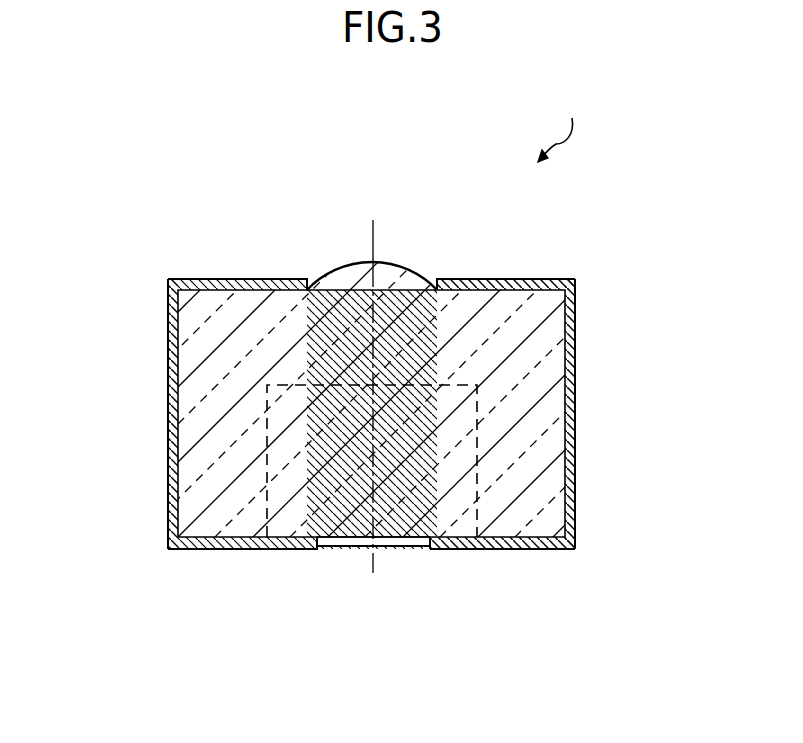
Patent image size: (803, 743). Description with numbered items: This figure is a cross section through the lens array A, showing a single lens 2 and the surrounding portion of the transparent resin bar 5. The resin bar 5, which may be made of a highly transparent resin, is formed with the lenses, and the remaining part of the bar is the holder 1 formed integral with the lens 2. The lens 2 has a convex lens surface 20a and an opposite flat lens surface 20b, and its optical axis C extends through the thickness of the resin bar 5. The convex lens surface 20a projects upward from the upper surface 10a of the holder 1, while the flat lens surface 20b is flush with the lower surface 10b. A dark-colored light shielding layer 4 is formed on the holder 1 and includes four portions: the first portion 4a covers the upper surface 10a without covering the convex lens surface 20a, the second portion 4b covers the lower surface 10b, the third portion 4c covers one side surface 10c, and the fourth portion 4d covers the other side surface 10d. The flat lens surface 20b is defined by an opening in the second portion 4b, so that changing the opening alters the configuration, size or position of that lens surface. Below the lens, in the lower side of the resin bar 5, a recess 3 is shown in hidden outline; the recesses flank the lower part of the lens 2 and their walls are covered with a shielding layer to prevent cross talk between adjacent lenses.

The holder 1 is at (537, 417).
The lens 2 is at (337, 317).
The recess 3 is at (333, 487).
The light shielding layer 4 is at (371, 414).
The first portion 4a is at (470, 278).
The second portion 4b is at (537, 550).
The third portion 4c is at (167, 448).
The fourth portion 4d is at (573, 483).
The resin bar 5 is at (532, 353).
The upper surface 10a is at (510, 278).
The lower surface 10b is at (507, 550).
The side surface 10c is at (167, 407).
The side surface 10d is at (572, 442).
The convex lens surface 20a is at (398, 296).
The flat lens surface 20b is at (393, 550).
The optical axis C is at (373, 245).
The lens array A is at (562, 121).